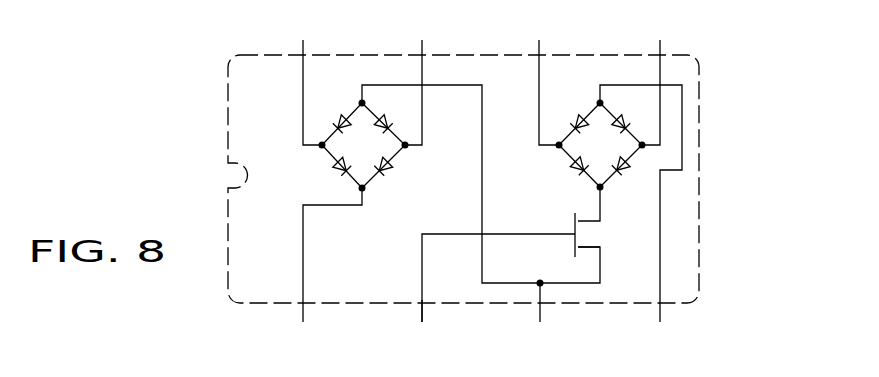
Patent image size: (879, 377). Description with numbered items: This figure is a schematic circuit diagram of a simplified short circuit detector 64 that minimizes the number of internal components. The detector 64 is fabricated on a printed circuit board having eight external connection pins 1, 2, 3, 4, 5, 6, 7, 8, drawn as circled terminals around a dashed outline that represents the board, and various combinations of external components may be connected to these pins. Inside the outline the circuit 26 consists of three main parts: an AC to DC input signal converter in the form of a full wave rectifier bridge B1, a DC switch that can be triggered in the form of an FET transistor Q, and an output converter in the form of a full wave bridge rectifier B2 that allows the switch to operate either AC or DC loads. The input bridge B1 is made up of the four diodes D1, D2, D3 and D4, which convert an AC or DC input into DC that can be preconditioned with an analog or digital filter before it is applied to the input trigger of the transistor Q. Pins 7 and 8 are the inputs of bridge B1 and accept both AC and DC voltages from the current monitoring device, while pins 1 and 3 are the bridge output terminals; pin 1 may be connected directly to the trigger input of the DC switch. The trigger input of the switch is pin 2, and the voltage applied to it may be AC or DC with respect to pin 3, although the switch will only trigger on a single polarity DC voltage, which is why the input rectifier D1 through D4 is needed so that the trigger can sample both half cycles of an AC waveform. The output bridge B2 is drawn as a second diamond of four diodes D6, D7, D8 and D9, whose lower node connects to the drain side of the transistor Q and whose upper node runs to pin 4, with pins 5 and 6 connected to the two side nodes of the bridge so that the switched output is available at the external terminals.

The external connection pin 1 is at (325, 270).
The external connection pin 2 is at (422, 326).
The external connection pin 3 is at (540, 316).
The external connection pin 4 is at (641, 218).
The external connection pin 5 is at (658, 77).
The external connection pin 6 is at (541, 77).
The external connection pin 7 is at (421, 77).
The external connection pin 8 is at (305, 77).
The switching circuit 26 is at (473, 278).
The short circuit detector 64 is at (704, 152).
The full wave rectifier bridge B1 is at (420, 184).
The full wave bridge rectifier B2 is at (597, 126).
The diode D1 is at (391, 110).
The diode D2 is at (397, 176).
The diode D3 is at (334, 110).
The diode D4 is at (329, 176).
The diode D6 is at (564, 174).
The diode D7 is at (571, 110).
The diode D8 is at (633, 174).
The diode D9 is at (630, 110).
The FET transistor Q is at (560, 216).